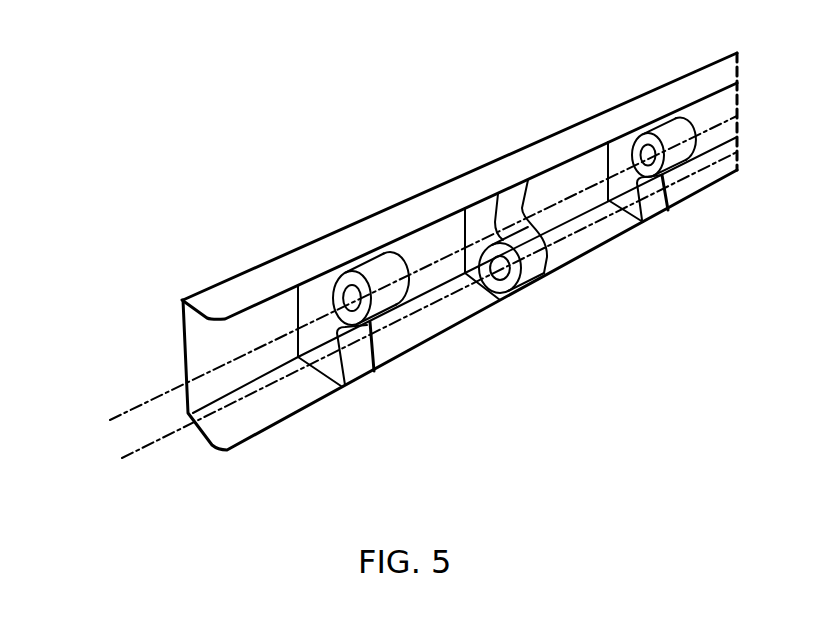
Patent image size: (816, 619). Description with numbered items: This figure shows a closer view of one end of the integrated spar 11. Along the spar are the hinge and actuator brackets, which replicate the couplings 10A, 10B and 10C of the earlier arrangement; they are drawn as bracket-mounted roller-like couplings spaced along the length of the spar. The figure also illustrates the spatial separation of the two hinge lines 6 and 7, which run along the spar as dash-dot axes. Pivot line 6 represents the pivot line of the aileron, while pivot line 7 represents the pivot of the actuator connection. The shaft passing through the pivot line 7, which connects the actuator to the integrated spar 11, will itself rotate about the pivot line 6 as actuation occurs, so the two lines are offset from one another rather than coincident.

The integrated spar 11 is at (183, 348).
The coupling 10A is at (358, 363).
The coupling 10B is at (528, 278).
The coupling 10C is at (652, 203).
The pivot line 6 is at (90, 423).
The pivot line 7 is at (112, 467).